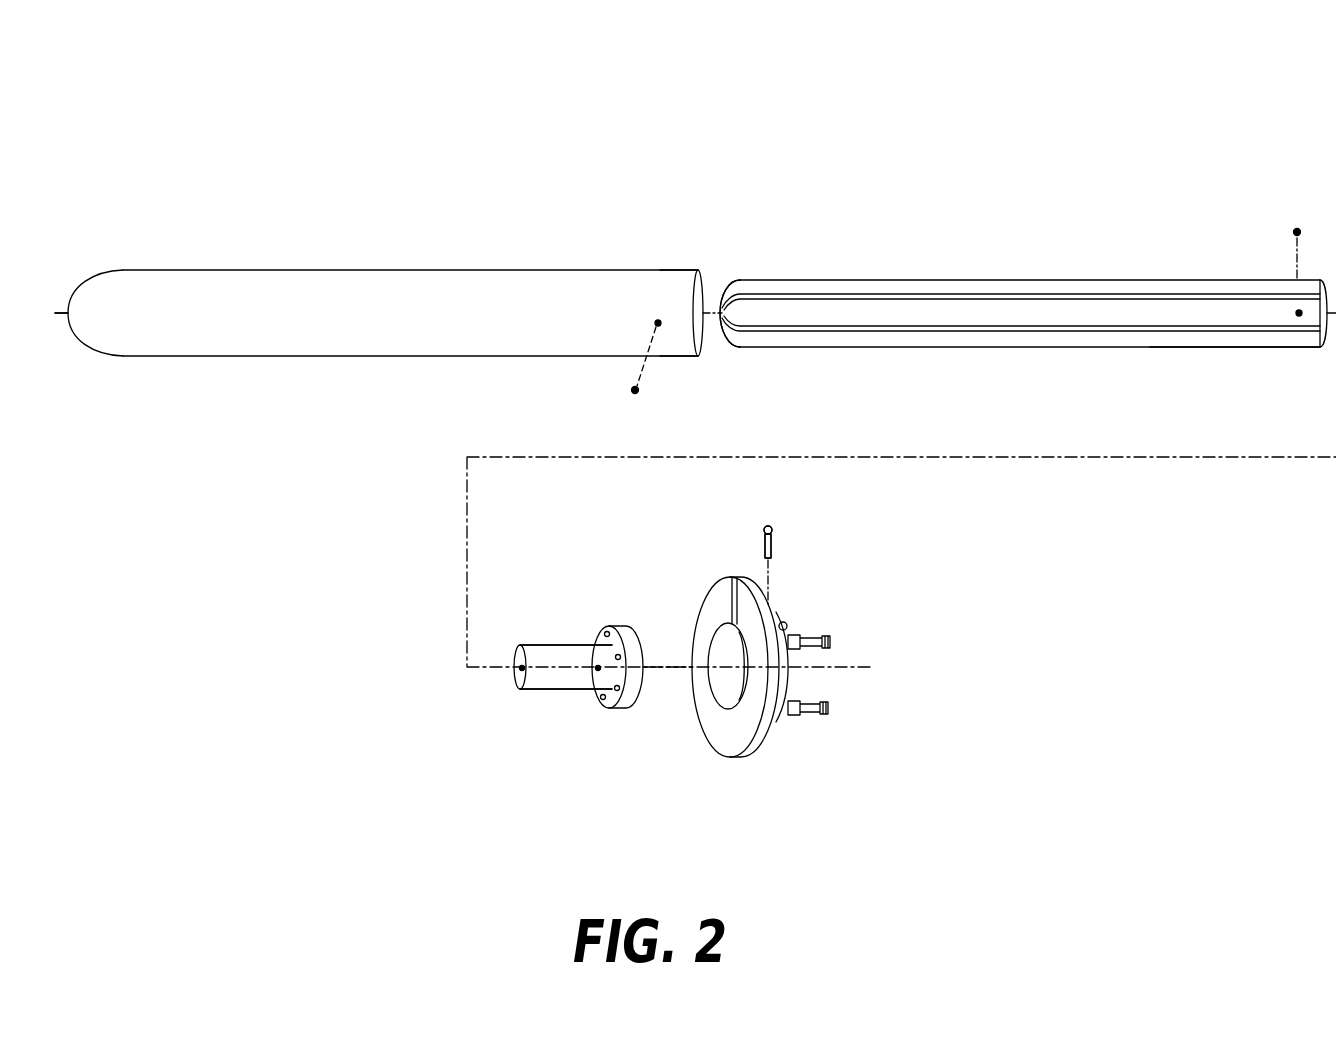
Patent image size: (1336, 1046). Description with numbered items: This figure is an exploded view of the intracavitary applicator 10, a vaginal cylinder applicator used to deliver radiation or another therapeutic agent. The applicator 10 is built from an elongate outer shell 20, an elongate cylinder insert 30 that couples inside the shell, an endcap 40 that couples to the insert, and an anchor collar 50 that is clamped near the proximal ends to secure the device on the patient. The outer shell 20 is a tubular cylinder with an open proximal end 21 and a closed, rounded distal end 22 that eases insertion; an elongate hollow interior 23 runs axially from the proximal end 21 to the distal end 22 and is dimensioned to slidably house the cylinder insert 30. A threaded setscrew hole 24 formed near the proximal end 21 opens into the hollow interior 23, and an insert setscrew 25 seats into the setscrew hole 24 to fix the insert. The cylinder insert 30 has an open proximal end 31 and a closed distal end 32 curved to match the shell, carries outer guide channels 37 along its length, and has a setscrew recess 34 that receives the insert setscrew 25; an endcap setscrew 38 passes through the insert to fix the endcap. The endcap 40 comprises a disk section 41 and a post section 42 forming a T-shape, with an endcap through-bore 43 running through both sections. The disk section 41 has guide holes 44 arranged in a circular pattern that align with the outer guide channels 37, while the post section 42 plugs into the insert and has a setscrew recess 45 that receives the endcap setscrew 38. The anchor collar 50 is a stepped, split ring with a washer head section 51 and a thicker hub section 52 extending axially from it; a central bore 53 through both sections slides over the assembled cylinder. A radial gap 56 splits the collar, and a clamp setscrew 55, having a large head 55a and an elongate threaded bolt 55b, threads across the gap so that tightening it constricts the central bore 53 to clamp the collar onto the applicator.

The intracavitary applicator 10 is at (762, 127).
The outer shell 20 is at (453, 270).
The proximal end 21 is at (642, 267).
The distal end 22 is at (162, 250).
The hollow interior 23 is at (703, 288).
The setscrew hole 24 is at (652, 322).
The insert setscrew 25 is at (640, 389).
The cylinder insert 30 is at (1062, 280).
The proximal end 31 is at (1232, 365).
The distal end 32 is at (722, 352).
The setscrew recess 34 is at (1299, 318).
The outer guide channels 37 is at (866, 295).
The endcap setscrew 38 is at (1292, 232).
The endcap 40 is at (538, 712).
The disk section 41 is at (628, 700).
The post section 42 is at (555, 648).
The endcap through-bore 43 is at (518, 669).
The guide holes 44 is at (618, 652).
The setscrew recess 45 is at (598, 672).
The anchor collar 50 is at (783, 753).
The washer head section 51 is at (735, 743).
The hub section 52 is at (785, 680).
The central bore 53 is at (728, 680).
The clamp setscrew 55 is at (773, 530).
The head 55a is at (760, 530).
The threaded bolt 55b is at (772, 550).
The radial gap 56 is at (723, 600).